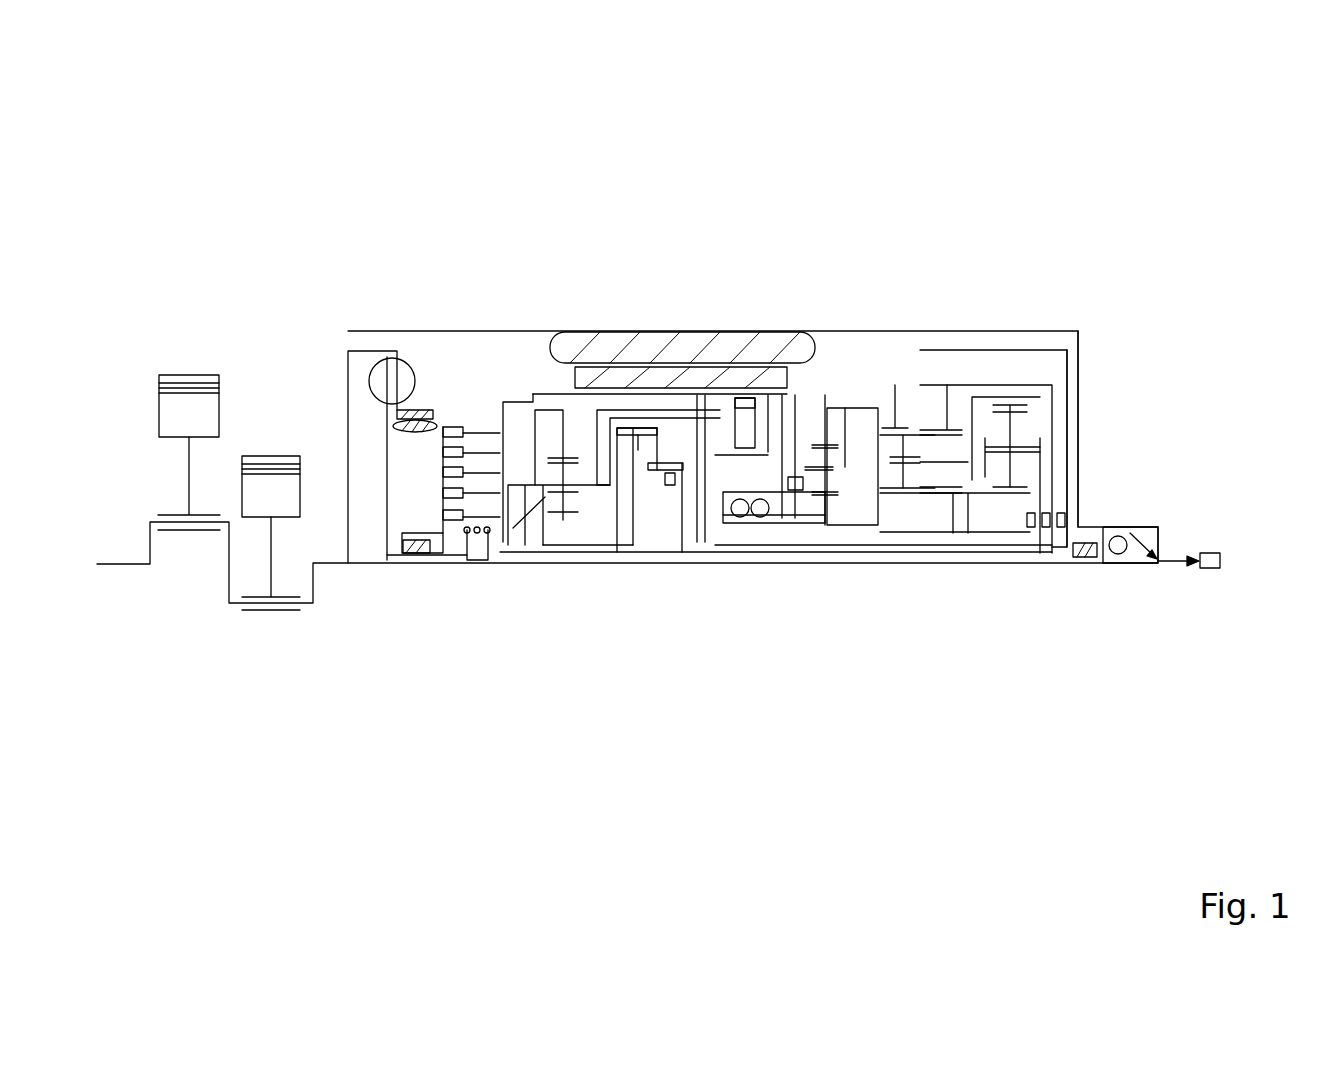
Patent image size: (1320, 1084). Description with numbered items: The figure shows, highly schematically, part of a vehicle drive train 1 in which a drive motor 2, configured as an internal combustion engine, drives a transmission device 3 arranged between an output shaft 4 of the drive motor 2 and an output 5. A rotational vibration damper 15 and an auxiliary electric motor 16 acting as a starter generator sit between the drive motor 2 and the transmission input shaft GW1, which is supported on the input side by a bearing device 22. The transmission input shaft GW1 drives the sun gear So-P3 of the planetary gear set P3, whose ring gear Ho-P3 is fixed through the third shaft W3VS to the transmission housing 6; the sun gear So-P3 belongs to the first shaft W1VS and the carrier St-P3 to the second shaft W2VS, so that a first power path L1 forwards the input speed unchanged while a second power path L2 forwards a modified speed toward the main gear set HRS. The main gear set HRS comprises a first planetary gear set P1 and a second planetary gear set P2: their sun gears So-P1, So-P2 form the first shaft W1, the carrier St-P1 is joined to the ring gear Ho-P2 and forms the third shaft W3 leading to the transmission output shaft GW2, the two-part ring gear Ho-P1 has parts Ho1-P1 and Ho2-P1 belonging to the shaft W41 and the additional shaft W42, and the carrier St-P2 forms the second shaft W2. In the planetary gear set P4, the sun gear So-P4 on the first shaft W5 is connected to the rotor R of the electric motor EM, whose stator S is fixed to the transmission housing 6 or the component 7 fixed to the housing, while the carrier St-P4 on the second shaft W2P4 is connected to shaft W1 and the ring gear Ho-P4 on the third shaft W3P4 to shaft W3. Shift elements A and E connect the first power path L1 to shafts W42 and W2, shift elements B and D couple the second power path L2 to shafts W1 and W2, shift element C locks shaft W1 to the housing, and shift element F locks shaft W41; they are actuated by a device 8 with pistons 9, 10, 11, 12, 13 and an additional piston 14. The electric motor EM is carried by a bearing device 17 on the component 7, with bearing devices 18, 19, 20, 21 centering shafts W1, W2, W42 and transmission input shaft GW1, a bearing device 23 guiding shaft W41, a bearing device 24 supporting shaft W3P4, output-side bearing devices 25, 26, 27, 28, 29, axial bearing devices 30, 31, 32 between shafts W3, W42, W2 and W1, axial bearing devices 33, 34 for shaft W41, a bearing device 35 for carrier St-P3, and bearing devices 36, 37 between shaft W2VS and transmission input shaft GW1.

The vehicle drive train 1 is at (305, 270).
The drive motor 2 is at (150, 320).
The transmission device 3 is at (802, 290).
The output shaft 4 is at (373, 565).
The output 5 is at (1205, 575).
The transmission housing 6 is at (1080, 327).
The component fixed to the housing 7 is at (435, 408).
The device 8 is at (460, 412).
The piston 9 is at (537, 465).
The piston 10 is at (443, 450).
The piston 11 is at (443, 473).
The piston 12 is at (443, 497).
The piston 13 is at (383, 567).
The additional piston 14 is at (878, 360).
The rotational vibration damper 15 is at (377, 362).
The auxiliary electric motor 16 is at (407, 360).
The bearing device 17 is at (770, 563).
The bearing device 18 is at (755, 563).
The bearing device 19 is at (735, 563).
The bearing device 20 is at (715, 563).
The bearing device 21 is at (690, 563).
The bearing device 22 is at (420, 563).
The bearing device 23 is at (810, 563).
The bearing device 24 is at (880, 545).
The bearing device 25 is at (1169, 584).
The bearing device 26 is at (1102, 565).
The bearing device 27 is at (1176, 629).
The bearing device 28 is at (1040, 565).
The bearing device 29 is at (1090, 567).
The bearing device 30 is at (1161, 442).
The bearing device 31 is at (1154, 501).
The bearing device 32 is at (1146, 481).
The bearing device 33 is at (708, 462).
The bearing device 34 is at (801, 352).
The bearing device 35 is at (505, 400).
The bearing device 36 is at (600, 563).
The bearing device 37 is at (620, 563).
The electric motor EM is at (682, 225).
The stator S is at (706, 385).
The rotor R is at (745, 345).
The first shift element A is at (650, 563).
The third shift element B is at (667, 563).
The fifth shift element C is at (790, 563).
The fourth shift element D is at (660, 462).
The second shift element E is at (640, 428).
The sixth shift element F is at (870, 372).
The first planetary gear set P1 is at (903, 776).
The second planetary gear set P2 is at (1010, 776).
The planetary gear set P3 is at (565, 776).
The planetary gear set P4 is at (826, 776).
The main gear set HRS is at (1034, 856).
The ring gear Ho-P1 is at (980, 385).
The ring gear part Ho1-P1 is at (935, 370).
The ring gear part Ho2-P1 is at (1000, 395).
The ring gear Ho-P2 is at (1110, 412).
The ring gear Ho-P3 is at (585, 402).
The ring gear Ho-P4 is at (820, 410).
The sun gear So-P1 is at (960, 545).
The sun gear So-P2 is at (1023, 557).
The sun gear So-P3 is at (533, 565).
The sun gear So-P4 is at (860, 563).
The carrier St-P1 is at (1007, 540).
The carrier St-P2 is at (1139, 415).
The carrier St-P3 is at (568, 563).
The carrier St-P4 is at (842, 440).
The first shaft W1 is at (950, 540).
The second shaft W2 is at (1133, 473).
The third shaft W3 is at (1030, 400).
The shaft W41 is at (827, 437).
The additional shaft W42 is at (1139, 399).
The first shaft W5 is at (828, 563).
The first shaft W1VS is at (534, 563).
The second shaft W2VS is at (510, 563).
The third shaft W3VS is at (537, 410).
The second shaft W2P4 is at (890, 563).
The third shaft W3P4 is at (920, 385).
The transmission input shaft GW1 is at (392, 565).
The transmission output shaft GW2 is at (1198, 611).
The first power path L1 is at (630, 563).
The second power path L2 is at (567, 462).